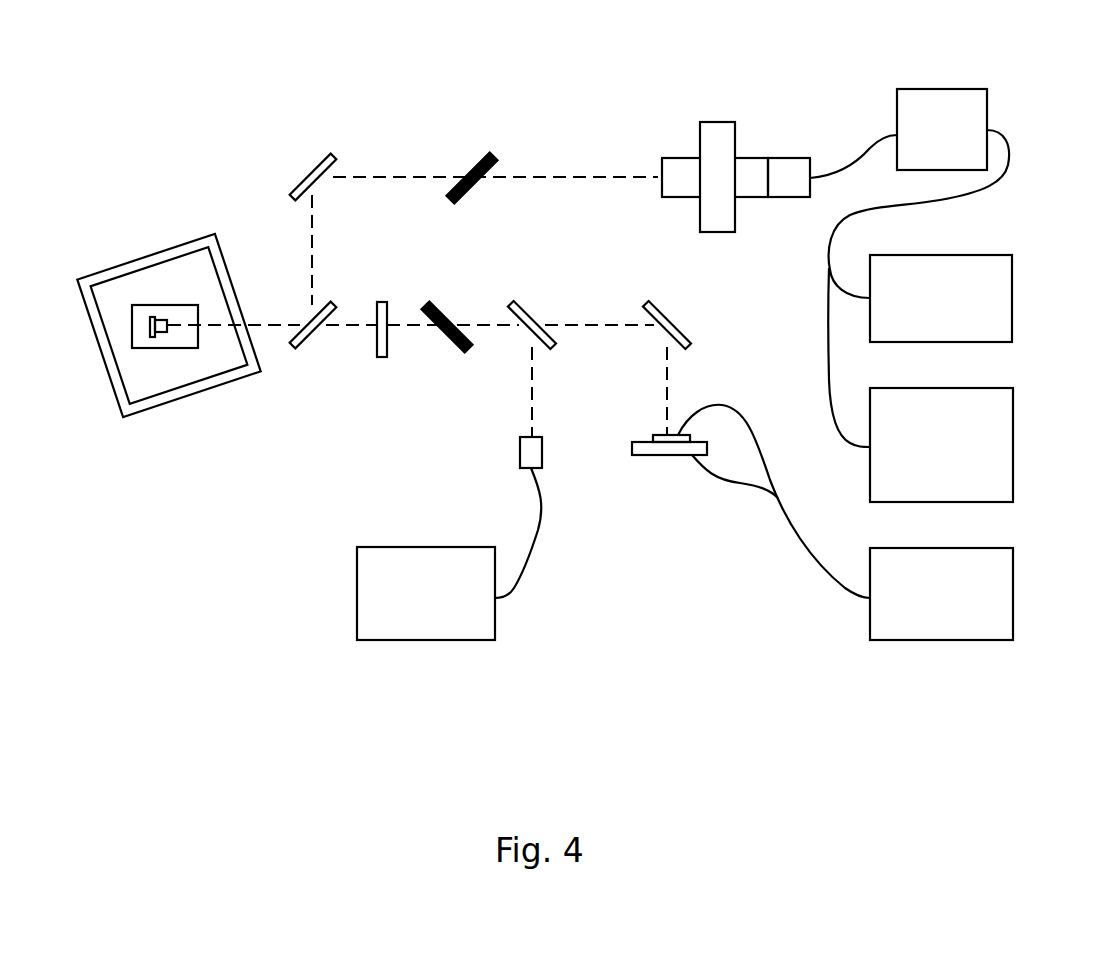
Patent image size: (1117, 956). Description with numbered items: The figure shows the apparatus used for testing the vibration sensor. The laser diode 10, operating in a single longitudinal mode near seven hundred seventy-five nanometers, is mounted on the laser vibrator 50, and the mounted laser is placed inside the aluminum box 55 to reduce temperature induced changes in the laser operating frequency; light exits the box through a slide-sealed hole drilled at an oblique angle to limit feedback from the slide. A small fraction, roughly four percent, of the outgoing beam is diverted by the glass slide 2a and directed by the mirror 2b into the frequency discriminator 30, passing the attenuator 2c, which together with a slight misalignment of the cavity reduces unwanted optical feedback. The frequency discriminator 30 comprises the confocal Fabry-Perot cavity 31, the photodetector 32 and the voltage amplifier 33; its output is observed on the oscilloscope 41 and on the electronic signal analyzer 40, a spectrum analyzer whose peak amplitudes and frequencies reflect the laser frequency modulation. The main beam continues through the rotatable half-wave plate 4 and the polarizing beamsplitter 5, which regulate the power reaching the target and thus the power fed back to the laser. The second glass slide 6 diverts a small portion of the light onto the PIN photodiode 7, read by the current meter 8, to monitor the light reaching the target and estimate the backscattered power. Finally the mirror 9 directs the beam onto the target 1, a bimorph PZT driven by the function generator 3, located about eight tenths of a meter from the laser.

The target 1 is at (658, 433).
The glass slide 2a is at (318, 340).
The mirror 2b is at (303, 178).
The attenuator 2c is at (468, 172).
The function generator 3 is at (1013, 600).
The rotatable half-wave plate 4 is at (383, 357).
The polarizing beamsplitter 5 is at (448, 318).
The second glass slide 6 is at (510, 318).
The PIN photodiode 7 is at (518, 450).
The current meter 8 is at (357, 592).
The mirror 9 is at (675, 332).
The laser diode 10 is at (150, 325).
The frequency discriminator 30 is at (992, 50).
The confocal Fabry-Perot cavity 31 is at (718, 122).
The photodetector 32 is at (803, 190).
The voltage amplifier 33 is at (945, 88).
The electronic signal analyzer 40 is at (1013, 442).
The oscilloscope 41 is at (1012, 298).
The laser vibrator 50 is at (167, 304).
The aluminum box 55 is at (175, 402).